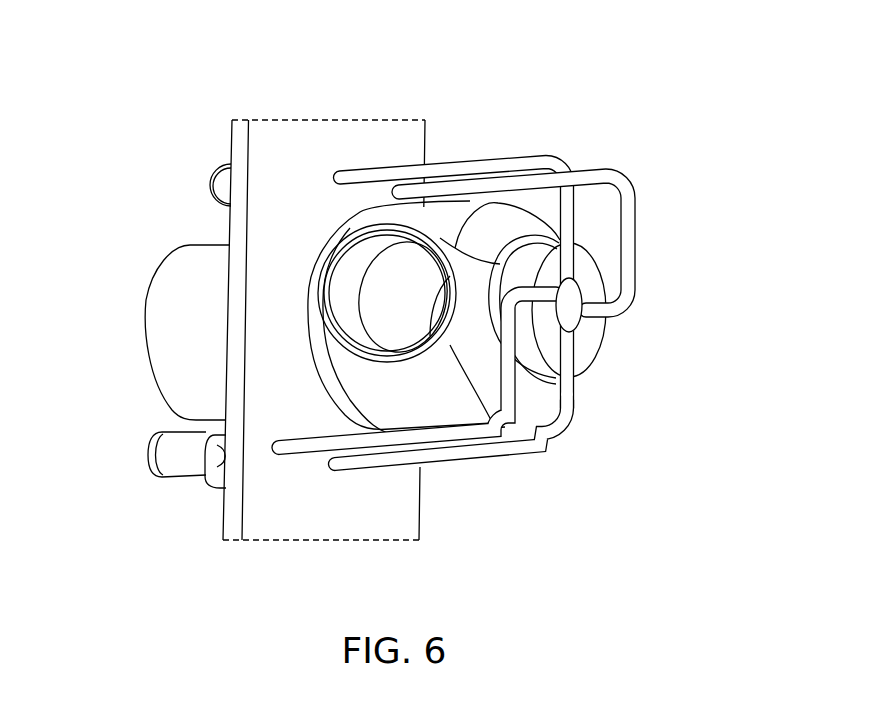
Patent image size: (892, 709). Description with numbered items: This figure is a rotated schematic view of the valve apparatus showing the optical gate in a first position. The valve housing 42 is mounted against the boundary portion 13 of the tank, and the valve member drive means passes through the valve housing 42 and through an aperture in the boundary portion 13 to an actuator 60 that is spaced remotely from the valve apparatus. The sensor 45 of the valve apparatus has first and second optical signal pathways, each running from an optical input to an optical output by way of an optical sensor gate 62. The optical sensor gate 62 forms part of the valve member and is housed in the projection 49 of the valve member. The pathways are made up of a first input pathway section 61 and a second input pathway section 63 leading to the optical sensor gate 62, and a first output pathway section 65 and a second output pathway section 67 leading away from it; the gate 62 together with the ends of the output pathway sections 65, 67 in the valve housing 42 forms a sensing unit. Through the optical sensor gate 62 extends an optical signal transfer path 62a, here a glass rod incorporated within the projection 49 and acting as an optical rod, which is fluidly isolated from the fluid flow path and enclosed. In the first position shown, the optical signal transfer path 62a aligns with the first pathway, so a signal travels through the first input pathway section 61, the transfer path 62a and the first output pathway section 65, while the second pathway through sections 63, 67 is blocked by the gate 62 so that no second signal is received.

The boundary portion 13 is at (397, 138).
The valve housing 42 is at (420, 410).
The sensor 45 is at (524, 317).
The projection 49 is at (580, 360).
The actuator 60 is at (152, 267).
The first input pathway section 61 is at (610, 172).
The optical sensor gate 62 is at (574, 323).
The optical signal transfer path 62a is at (573, 303).
The second input pathway section 63 is at (528, 160).
The first output pathway section 65 is at (490, 437).
The second output pathway section 67 is at (553, 443).